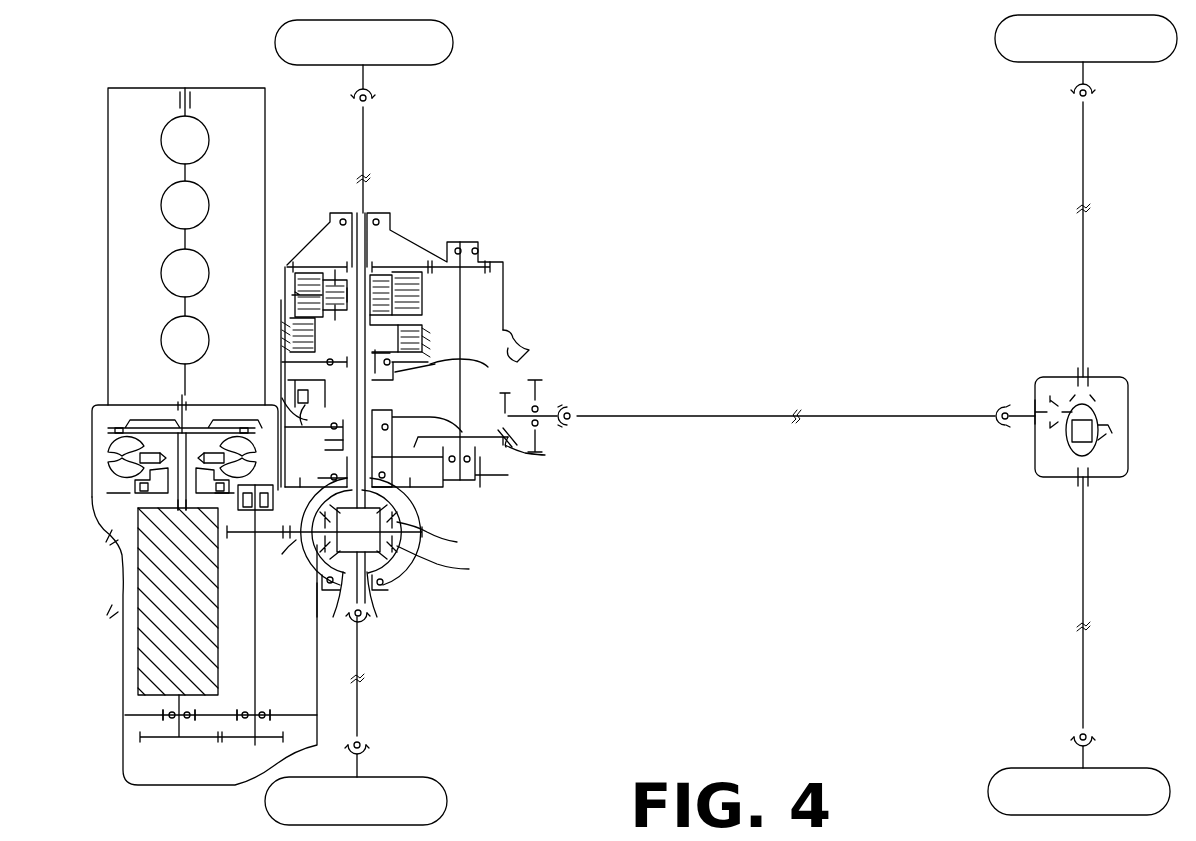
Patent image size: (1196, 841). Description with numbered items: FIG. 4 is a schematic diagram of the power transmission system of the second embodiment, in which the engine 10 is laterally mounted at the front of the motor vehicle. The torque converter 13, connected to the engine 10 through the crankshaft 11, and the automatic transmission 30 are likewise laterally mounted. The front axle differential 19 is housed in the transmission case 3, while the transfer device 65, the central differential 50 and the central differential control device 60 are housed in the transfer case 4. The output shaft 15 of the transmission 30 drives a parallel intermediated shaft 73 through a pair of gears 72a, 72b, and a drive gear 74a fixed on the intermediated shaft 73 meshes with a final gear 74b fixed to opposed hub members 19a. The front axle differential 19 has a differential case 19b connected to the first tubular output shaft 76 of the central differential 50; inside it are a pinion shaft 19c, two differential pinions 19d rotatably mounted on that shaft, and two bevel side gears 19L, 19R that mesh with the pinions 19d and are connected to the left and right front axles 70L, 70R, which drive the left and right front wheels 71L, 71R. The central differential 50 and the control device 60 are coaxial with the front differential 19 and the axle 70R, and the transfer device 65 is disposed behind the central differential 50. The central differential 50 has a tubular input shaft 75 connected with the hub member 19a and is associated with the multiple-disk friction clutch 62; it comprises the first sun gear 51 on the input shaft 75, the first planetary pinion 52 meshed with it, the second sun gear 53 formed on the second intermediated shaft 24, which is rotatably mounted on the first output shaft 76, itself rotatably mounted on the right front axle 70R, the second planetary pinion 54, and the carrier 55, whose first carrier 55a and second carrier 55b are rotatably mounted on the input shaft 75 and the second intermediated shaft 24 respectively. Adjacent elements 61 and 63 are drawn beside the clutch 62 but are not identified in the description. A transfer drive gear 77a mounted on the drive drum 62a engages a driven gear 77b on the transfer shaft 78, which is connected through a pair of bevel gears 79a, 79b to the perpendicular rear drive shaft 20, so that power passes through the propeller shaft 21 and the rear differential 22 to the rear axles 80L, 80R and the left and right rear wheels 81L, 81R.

The transmission case 3 is at (112, 600).
The transfer case 4 is at (521, 340).
The engine 10 is at (108, 304).
The crankshaft 11 is at (182, 382).
The torque converter 13 is at (104, 464).
The output shaft 15 is at (179, 725).
The front axle differential 19 is at (438, 520).
The hub members 19a is at (398, 568).
The differential case 19b is at (442, 563).
The pinion shaft 19c is at (368, 606).
The differential pinions 19d is at (440, 538).
The left bevel side gear 19L is at (340, 610).
The right bevel side gear 19R is at (387, 467).
The rear drive shaft 20 is at (556, 400).
The propeller shaft 21 is at (880, 413).
The rear differential 22 is at (1096, 392).
The second intermediated shaft 24 is at (368, 368).
The automatic transmission 30 is at (150, 654).
The central differential 50 is at (413, 418).
The first sun gear 51 is at (452, 421).
The first planetary pinion 52 is at (298, 398).
The second sun gear 53 is at (432, 378).
The second planetary pinion 54 is at (290, 385).
The carrier 55 is at (413, 389).
The first carrier 55a is at (300, 415).
The second carrier 55b is at (504, 350).
The central differential control device 60 is at (440, 290).
The gear 61 is at (292, 296).
The multiple-disk friction clutch 62 is at (333, 273).
The drive drum 62a is at (385, 275).
The gear 63 is at (290, 335).
The transfer device 65 is at (527, 296).
The right front axle 70R is at (366, 140).
The left front axle 70L is at (359, 660).
The right front wheel 71R is at (456, 44).
The left front wheel 71L is at (423, 778).
The gear 72a is at (167, 746).
The gear 72b is at (237, 746).
The intermediated shaft 73 is at (255, 651).
The drive gear 74a is at (244, 536).
The final gear 74b is at (310, 555).
The tubular input shaft 75 is at (332, 471).
The first tubular output shaft 76 is at (332, 438).
The transfer drive gear 77a is at (428, 260).
The driven gear 77b is at (488, 260).
The transfer shaft 78 is at (482, 322).
The bevel gear 79a is at (518, 456).
The bevel gear 79b is at (500, 392).
The right rear axle 80R is at (1083, 257).
The left rear axle 80L is at (1083, 574).
The right rear wheel 81R is at (995, 44).
The left rear wheel 81L is at (1142, 768).